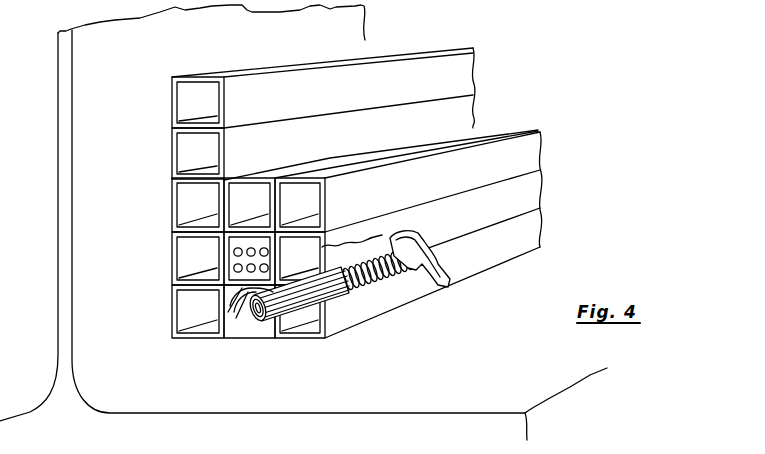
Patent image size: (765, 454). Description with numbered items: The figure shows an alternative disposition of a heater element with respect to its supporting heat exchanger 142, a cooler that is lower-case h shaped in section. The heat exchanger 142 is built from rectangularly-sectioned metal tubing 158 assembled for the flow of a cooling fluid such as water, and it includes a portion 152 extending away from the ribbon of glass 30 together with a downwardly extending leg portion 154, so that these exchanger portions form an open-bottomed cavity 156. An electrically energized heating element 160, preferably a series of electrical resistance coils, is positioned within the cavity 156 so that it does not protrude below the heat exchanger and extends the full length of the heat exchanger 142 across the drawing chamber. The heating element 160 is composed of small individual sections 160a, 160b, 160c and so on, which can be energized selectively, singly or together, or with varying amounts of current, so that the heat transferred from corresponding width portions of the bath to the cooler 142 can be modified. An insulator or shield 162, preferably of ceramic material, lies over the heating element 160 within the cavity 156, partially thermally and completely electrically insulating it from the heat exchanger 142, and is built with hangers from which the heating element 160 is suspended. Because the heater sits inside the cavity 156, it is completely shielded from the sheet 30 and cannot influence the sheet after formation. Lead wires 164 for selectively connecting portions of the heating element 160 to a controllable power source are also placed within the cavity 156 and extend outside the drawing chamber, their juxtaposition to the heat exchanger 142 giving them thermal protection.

The ribbon of glass 30 is at (72, 247).
The heat exchanger 142 is at (342, 245).
The portion extending away from the ribbon 152 is at (286, 178).
The downwardly extending leg portion 154 is at (531, 228).
The open-bottomed cavity 156 is at (233, 333).
The rectangularly-sectioned metal tubing 158 is at (168, 116).
The heating element 160 is at (342, 306).
The heating element section 160a is at (262, 322).
The heating element section 160b is at (376, 282).
The heating element section 160c is at (412, 277).
The insulator or shield 162 is at (236, 292).
The lead wires 164 is at (235, 256).